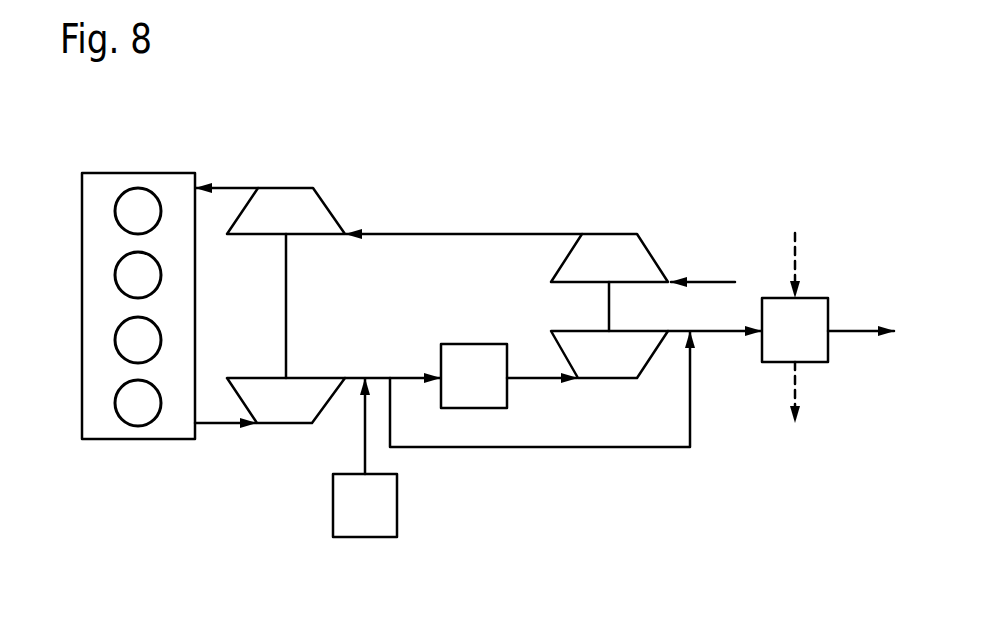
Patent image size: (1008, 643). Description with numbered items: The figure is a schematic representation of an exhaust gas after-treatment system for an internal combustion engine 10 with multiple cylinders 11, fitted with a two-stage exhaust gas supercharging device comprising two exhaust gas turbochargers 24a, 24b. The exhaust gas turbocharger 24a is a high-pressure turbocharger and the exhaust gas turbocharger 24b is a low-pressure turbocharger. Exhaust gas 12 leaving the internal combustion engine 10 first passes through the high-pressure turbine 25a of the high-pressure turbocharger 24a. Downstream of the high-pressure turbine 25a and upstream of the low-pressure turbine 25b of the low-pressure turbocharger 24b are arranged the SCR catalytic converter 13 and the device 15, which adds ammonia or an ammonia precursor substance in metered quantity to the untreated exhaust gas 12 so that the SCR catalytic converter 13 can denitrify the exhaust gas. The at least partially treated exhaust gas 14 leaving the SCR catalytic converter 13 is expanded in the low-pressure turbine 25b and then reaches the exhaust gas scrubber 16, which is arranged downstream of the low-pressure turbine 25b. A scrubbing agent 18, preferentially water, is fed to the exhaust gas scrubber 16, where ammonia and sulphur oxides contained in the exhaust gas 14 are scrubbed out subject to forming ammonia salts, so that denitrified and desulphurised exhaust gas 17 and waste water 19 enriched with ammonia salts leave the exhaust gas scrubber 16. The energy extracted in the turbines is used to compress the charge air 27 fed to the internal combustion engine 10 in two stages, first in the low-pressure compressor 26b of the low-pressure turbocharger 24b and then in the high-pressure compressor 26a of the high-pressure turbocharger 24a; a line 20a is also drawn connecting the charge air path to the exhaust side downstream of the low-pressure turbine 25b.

The internal combustion engine 10 is at (175, 160).
The cylinders 11 is at (128, 218).
The exhaust gas 12 is at (215, 425).
The SCR catalytic converter 13 is at (474, 352).
The at least partially treated exhaust gas 14 is at (533, 380).
The device 15 is at (397, 508).
The exhaust gas scrubber 16 is at (812, 305).
The desulphurised exhaust gas 17 is at (850, 335).
The scrubbing agent 18 is at (792, 248).
The waste water 19 is at (793, 390).
The bypass line 20a is at (570, 449).
The high-pressure exhaust gas turbocharger 24a is at (307, 266).
The low-pressure exhaust gas turbocharger 24b is at (600, 293).
The high-pressure turbine 25a is at (315, 385).
The low-pressure turbine 25b is at (612, 367).
The high-pressure compressor 26a is at (315, 225).
The low-pressure compressor 26b is at (620, 245).
The charge air 27 is at (235, 188).